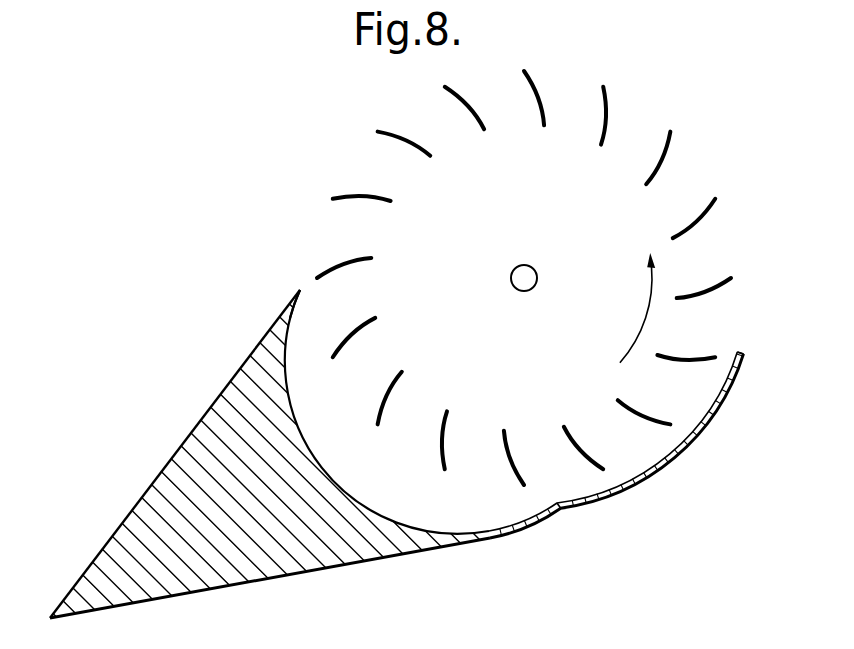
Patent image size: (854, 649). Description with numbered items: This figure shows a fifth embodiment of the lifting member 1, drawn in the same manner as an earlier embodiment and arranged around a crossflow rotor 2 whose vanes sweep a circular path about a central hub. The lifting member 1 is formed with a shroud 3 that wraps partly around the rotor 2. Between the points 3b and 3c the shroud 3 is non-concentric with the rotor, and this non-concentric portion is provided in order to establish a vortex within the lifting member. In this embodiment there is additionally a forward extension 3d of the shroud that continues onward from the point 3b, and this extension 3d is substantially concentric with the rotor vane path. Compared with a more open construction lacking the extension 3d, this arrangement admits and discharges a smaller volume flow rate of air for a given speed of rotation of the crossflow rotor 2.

The lifting member 1 is at (152, 389).
The crossflow rotor 2 is at (692, 156).
The shroud 3 is at (522, 535).
The point 3b is at (568, 507).
The point 3c is at (298, 291).
The forward extension 3d is at (693, 433).